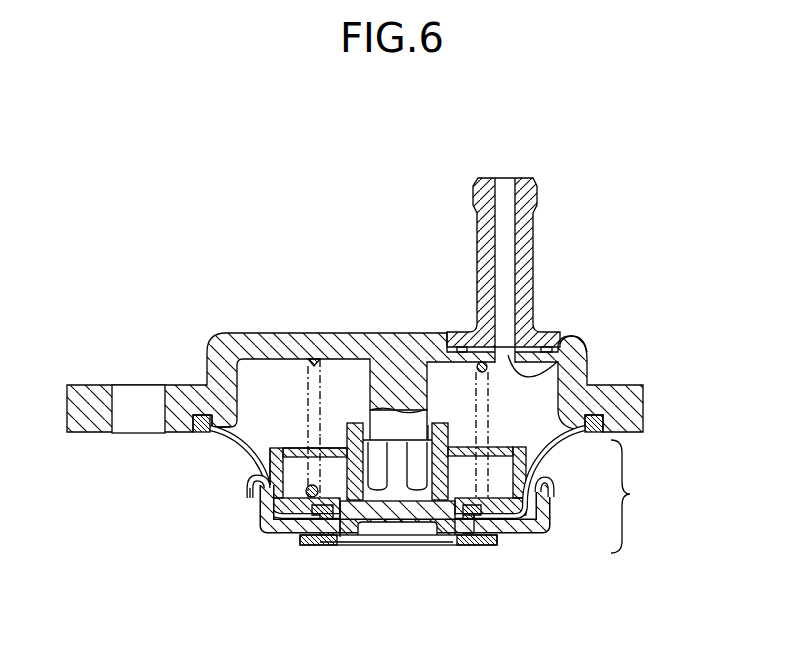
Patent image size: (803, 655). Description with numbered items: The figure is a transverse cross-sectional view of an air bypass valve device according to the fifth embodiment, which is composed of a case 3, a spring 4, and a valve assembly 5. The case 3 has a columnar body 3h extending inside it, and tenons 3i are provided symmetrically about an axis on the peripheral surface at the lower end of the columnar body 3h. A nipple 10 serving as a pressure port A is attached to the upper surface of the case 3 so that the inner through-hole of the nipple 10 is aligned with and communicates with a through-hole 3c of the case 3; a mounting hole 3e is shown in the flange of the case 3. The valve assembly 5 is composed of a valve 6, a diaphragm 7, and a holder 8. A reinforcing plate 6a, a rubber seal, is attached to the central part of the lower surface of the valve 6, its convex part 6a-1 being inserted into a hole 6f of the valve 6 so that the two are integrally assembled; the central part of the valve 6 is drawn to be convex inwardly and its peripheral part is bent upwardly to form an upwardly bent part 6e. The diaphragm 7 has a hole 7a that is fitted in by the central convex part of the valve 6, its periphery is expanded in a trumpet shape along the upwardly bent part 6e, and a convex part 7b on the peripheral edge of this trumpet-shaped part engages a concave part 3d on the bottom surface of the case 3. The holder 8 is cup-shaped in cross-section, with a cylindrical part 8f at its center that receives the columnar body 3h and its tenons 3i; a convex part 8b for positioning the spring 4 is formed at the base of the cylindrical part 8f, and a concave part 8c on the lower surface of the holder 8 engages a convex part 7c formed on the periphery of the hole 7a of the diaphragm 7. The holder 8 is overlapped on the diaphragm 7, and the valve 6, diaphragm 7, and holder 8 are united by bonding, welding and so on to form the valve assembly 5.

The case 3 is at (587, 352).
The through-hole of the case 3c is at (568, 337).
The concave part on the bottom surface of the case 3d is at (190, 413).
The mounting hole 3e is at (130, 397).
The columnar body 3h is at (428, 380).
The tenons 3i is at (428, 433).
The spring 4 is at (307, 380).
The valve assembly 5 is at (632, 494).
The valve 6 is at (531, 520).
The reinforcing plate 6a is at (414, 538).
The convex part of the rubber seal 6a-1 is at (470, 512).
The upwardly bent part of the valve 6e is at (256, 487).
The hole of the valve 6f is at (354, 522).
The diaphragm 7 is at (541, 462).
The hole of the diaphragm 7a is at (457, 520).
The convex part of the diaphragm 7b is at (200, 433).
The convex part on the periphery of the diaphragm hole 7c is at (322, 515).
The holder 8 is at (532, 442).
The convex part for positioning the spring 8b is at (272, 452).
The concave part of the holder 8c is at (300, 508).
The cylindrical part 8f is at (318, 446).
The nipple 10 is at (538, 215).
The pressure port A is at (504, 188).